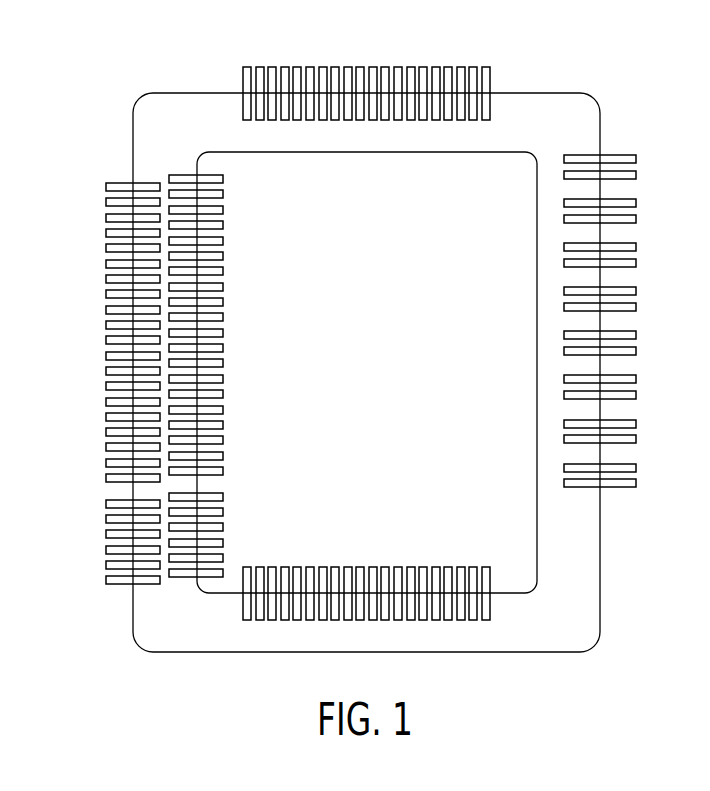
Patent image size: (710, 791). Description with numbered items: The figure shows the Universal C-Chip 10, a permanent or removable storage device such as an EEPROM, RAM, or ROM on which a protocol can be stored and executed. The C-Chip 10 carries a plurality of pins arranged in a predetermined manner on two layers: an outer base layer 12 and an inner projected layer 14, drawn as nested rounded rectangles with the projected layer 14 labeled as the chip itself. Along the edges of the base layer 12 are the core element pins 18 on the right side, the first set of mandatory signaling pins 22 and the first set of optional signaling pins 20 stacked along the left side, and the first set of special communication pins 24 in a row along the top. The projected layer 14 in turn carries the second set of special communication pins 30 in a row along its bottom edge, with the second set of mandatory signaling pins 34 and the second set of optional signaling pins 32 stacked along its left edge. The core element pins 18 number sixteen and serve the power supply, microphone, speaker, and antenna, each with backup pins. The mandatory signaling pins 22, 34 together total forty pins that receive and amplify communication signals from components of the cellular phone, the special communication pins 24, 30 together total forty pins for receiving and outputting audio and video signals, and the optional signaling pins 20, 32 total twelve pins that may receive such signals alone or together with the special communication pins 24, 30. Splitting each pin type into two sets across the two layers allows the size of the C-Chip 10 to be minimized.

The Universal C-Chip 10 is at (100, 88).
The base layer 12 is at (565, 93).
The projected layer 14 is at (510, 152).
The core element pins 18 is at (636, 158).
The first set of optional signaling pins 20 is at (106, 504).
The first set of mandatory signaling pins 22 is at (106, 186).
The first set of special communication pins 24 is at (486, 67).
The second set of special communication pins 30 is at (485, 620).
The second set of optional signaling pins 32 is at (223, 512).
The second set of mandatory signaling pins 34 is at (223, 287).